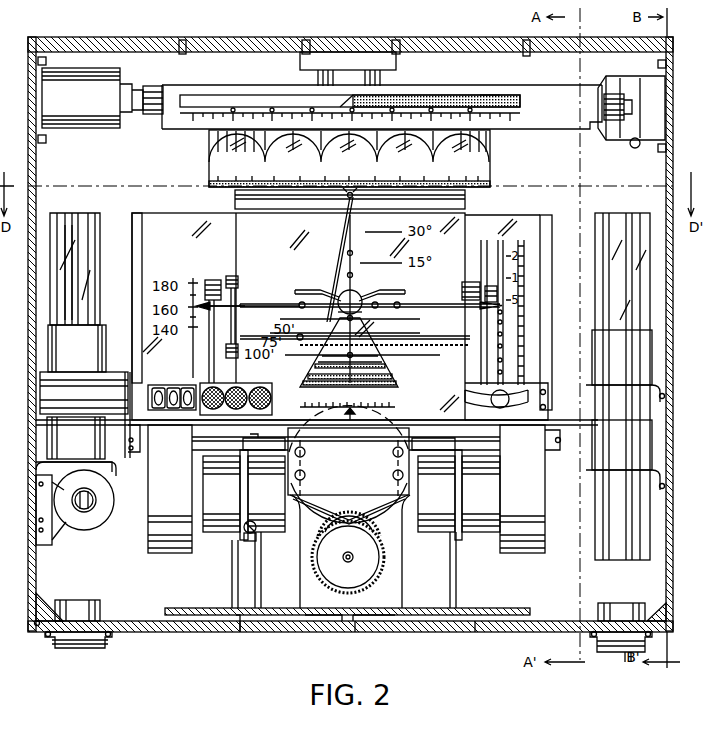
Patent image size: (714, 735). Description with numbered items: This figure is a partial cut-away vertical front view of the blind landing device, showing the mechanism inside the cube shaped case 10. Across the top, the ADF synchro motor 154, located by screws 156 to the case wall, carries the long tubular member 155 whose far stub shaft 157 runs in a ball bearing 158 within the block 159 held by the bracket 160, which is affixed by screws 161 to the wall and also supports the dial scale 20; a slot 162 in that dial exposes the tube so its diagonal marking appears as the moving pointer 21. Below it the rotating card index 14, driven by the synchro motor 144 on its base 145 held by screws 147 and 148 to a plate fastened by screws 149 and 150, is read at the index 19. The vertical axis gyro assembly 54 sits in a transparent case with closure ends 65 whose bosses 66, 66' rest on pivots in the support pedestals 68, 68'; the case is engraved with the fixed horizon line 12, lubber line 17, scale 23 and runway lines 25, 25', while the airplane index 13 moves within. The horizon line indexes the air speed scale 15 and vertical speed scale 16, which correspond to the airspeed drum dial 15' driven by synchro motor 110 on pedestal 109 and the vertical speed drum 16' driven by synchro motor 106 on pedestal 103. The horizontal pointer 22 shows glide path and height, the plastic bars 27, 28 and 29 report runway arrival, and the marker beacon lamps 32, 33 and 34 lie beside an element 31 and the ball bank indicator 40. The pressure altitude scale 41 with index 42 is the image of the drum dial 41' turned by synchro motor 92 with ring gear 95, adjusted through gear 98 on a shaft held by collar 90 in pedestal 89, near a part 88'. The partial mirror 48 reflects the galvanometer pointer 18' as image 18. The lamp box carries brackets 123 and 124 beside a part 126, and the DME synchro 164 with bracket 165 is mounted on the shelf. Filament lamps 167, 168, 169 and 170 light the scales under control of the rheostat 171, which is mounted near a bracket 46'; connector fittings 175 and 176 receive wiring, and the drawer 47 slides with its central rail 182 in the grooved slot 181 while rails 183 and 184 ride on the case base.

The cube shaped case 10 is at (673, 292).
The fixed horizon line 12 is at (452, 308).
The airplane index 13 is at (372, 295).
The rotating card index 14 is at (364, 158).
The air speed scale 15 is at (157, 298).
The airspeed drum dial 15' is at (156, 489).
The vertical speed scale 16 is at (508, 317).
The vertical speed drum 16' is at (528, 489).
The lubber line 17 is at (353, 248).
The pointer 18 is at (331, 259).
The pointer 18' is at (348, 464).
The index 19 is at (354, 198).
The scale 20 is at (190, 130).
The pointer 21 is at (356, 100).
The horizontal pointer 22 is at (405, 336).
The scale 23 is at (272, 334).
The radiating line 25 is at (377, 351).
The radiating line 25' is at (347, 333).
The plastic bar 27 is at (395, 380).
The plastic bar 28 is at (322, 372).
The plastic bar 29 is at (390, 366).
The switch 31 is at (178, 390).
The marker beacon lamp 32 is at (213, 390).
The marker beacon lamp 33 is at (238, 387).
The marker beacon lamp 34 is at (258, 386).
The ball bank indicator 40 is at (500, 392).
The scale 41 is at (365, 401).
The drum dial 41' is at (359, 551).
The index 42 is at (355, 414).
The bracket 46' is at (77, 511).
The drawer 47 is at (496, 608).
The partial mirror 48 is at (150, 238).
The vertical axis gyro assembly 54 is at (460, 242).
The closure end 65 is at (235, 200).
The boss 66 is at (474, 279).
The boss 66' is at (223, 300).
The support pedestal 68 is at (499, 273).
The support pedestal 68' is at (205, 323).
The clamp 88' is at (265, 547).
The pedestal 89 is at (256, 578).
The collar 90 is at (256, 524).
The synchro motor 92 is at (340, 512).
The ring gear 95 is at (362, 514).
The gear 98 is at (372, 582).
The pedestal 103 is at (458, 568).
The synchro motor 106 is at (466, 514).
The pedestal 109 is at (240, 576).
The synchro motor 110 is at (228, 514).
The bracket 123 is at (286, 442).
The bracket 124 is at (410, 442).
The pin 126 is at (541, 450).
The synchro motor 144 is at (318, 76).
The base 145 is at (300, 62).
The screw 147 is at (396, 40).
The screw 148 is at (305, 40).
The screw 149 is at (527, 40).
The screw 150 is at (181, 40).
The synchro motor 154 is at (95, 128).
The tubular member 155 is at (148, 86).
The screw 156 is at (46, 60).
The stub shaft 157 is at (628, 110).
The ball bearing 158 is at (640, 94).
The block 159 is at (634, 122).
The bracket 160 is at (635, 148).
The screw 161 is at (658, 64).
The slot 162 is at (478, 95).
The synchro 164 is at (100, 356).
The bracket 165 is at (112, 470).
The filament lamp 167 is at (96, 312).
The filament lamp 168 is at (95, 268).
The filament lamp 169 is at (612, 405).
The filament lamp 170 is at (612, 296).
The rheostat 171 is at (102, 513).
The electrical connector fitting 175 is at (104, 643).
The electrical connector fitting 176 is at (624, 658).
The grooved slot 181 is at (355, 633).
The central rail 182 is at (357, 615).
The rail 183 is at (240, 633).
The rail 184 is at (475, 633).